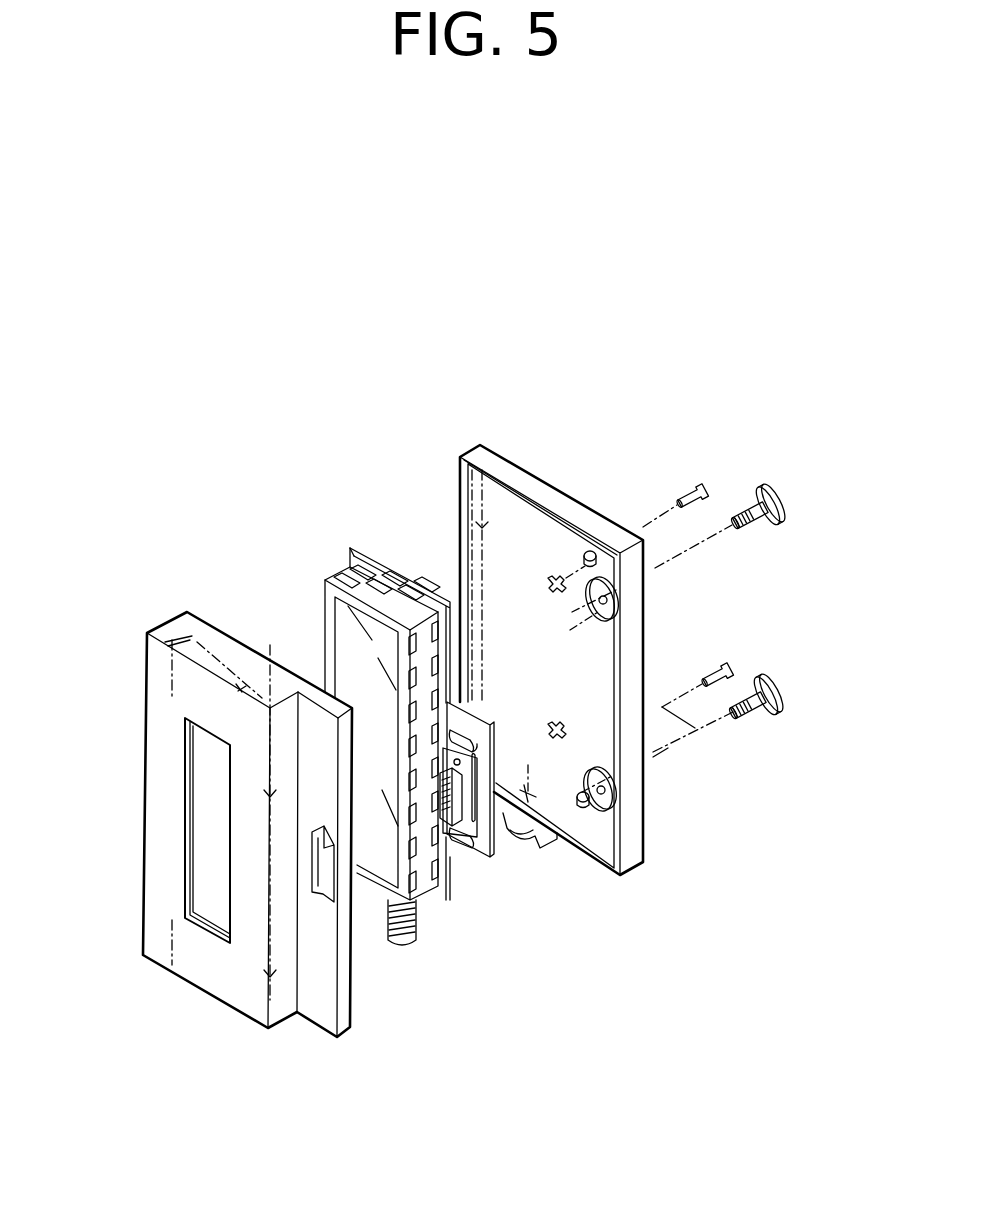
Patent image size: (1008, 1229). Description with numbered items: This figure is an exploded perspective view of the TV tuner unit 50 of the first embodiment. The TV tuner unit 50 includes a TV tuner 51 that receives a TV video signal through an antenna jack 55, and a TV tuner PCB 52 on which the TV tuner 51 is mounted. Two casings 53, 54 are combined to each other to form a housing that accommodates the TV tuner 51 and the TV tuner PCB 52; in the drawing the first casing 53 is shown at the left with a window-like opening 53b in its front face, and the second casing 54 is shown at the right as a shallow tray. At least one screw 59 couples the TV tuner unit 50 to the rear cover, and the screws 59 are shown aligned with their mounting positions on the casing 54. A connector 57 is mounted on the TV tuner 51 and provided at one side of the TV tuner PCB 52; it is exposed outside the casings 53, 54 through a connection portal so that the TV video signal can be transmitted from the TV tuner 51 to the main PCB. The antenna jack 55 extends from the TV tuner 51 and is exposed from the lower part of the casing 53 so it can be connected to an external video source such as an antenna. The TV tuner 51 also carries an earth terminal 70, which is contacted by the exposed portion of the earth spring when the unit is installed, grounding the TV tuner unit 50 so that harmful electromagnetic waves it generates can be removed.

The TV tuner unit 50 is at (667, 940).
The TV tuner 51 is at (422, 850).
The TV tuner PCB 52 is at (352, 548).
The casing 53 is at (347, 1023).
The window opening 53b is at (207, 878).
The casing 54 is at (533, 490).
The antenna jack 55 is at (402, 946).
The connector 57 is at (478, 810).
The screw 59 is at (790, 677).
The earth terminal 70 is at (358, 660).